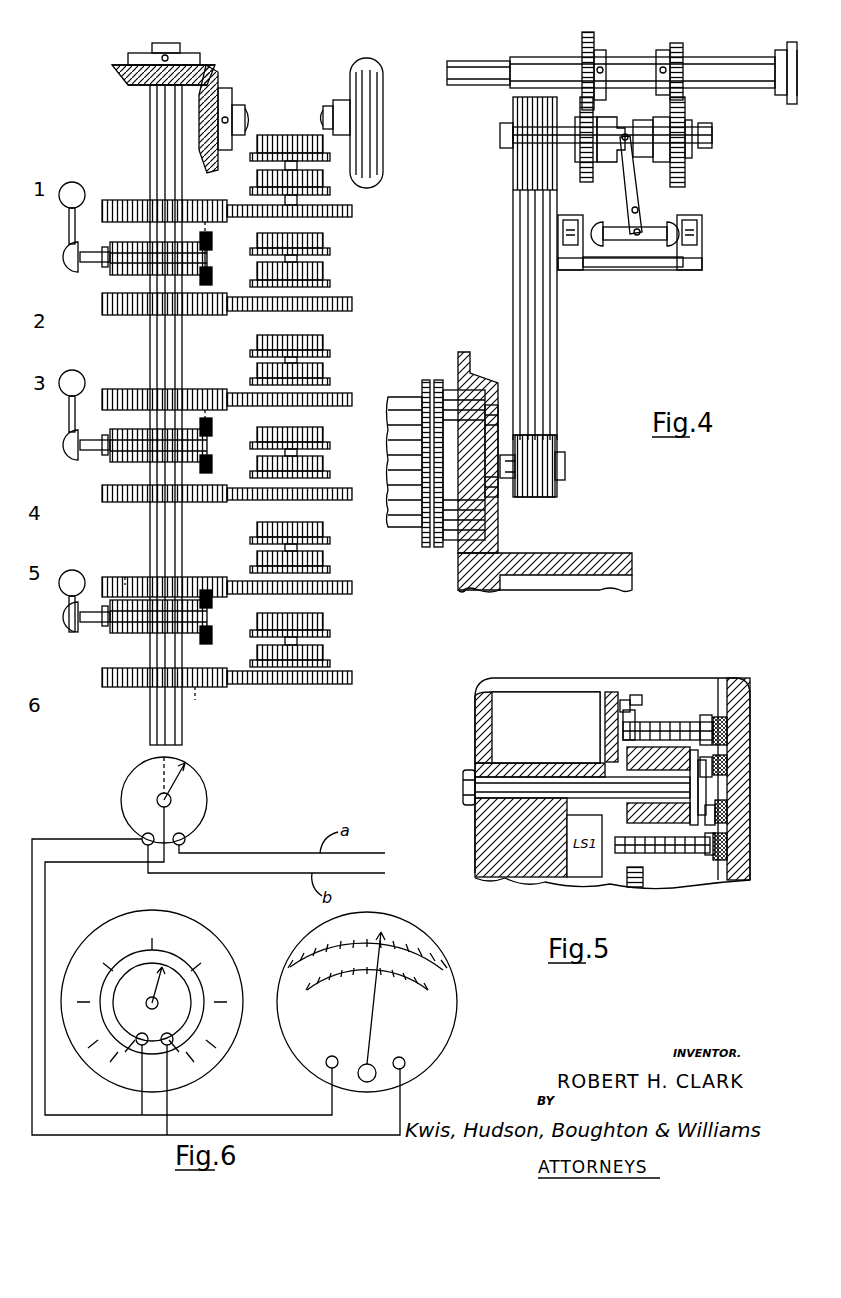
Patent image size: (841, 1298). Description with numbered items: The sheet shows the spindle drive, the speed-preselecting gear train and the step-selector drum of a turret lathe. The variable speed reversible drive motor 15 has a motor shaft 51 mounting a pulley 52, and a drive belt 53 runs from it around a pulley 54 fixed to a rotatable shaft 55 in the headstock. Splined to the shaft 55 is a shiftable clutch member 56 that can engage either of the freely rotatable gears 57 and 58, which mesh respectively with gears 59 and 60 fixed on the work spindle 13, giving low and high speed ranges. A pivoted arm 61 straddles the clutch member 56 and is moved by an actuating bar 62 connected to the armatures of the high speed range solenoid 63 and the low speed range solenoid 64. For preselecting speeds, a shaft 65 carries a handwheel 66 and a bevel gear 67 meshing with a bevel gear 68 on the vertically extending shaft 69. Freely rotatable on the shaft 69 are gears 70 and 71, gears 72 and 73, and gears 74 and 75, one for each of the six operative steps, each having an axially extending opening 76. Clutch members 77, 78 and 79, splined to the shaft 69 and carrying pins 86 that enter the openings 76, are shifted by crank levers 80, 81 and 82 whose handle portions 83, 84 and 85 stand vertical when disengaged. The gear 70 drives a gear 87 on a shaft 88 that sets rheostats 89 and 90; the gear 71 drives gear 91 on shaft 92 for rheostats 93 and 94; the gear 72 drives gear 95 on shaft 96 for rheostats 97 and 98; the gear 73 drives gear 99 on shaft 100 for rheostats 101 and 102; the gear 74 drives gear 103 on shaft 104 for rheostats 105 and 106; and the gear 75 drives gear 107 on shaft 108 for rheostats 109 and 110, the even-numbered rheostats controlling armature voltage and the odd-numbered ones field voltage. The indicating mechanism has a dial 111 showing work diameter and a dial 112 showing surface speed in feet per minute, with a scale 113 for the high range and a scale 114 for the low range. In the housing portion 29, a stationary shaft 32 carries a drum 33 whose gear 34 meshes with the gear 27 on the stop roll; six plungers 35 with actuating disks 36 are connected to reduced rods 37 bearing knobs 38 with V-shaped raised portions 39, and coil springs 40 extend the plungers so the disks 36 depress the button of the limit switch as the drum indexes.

In FIG. 4, the work spindle 13 is at (730, 60).
In FIG. 4, the spindle drive motor 15 is at (405, 395).
In FIG. 5, the gear 27 is at (645, 887).
In FIG. 5, the housing portion 29 is at (480, 820).
In FIG. 5, the stationary shaft 32 is at (576, 787).
In FIG. 5, the drum 33 is at (660, 740).
In FIG. 5, the gear 34 is at (634, 695).
In FIG. 5, the plungers 35 is at (640, 722).
In FIG. 5, the actuating disks 36 is at (620, 720).
In FIG. 5, the reduced rods 37 is at (703, 742).
In FIG. 5, the knobs 38 is at (727, 722).
In FIG. 5, the V-shaped raised portions 39 is at (727, 738).
In FIG. 5, the coil springs 40 is at (697, 715).
In FIG. 4, the motor shaft 51 is at (565, 462).
In FIG. 4, the pulley 52 is at (558, 440).
In FIG. 4, the drive belt 53 is at (557, 340).
In FIG. 4, the pulley 54 is at (513, 172).
In FIG. 4, the rotatable shaft 55 is at (702, 137).
In FIG. 4, the shiftable clutch member 56 is at (624, 130).
In FIG. 4, the gear 57 is at (586, 182).
In FIG. 4, the gear 58 is at (683, 187).
In FIG. 4, the gear 59 is at (588, 32).
In FIG. 4, the gear 60 is at (683, 48).
In FIG. 4, the pivoted arm 61 is at (636, 190).
In FIG. 4, the actuating bar 62 is at (655, 270).
In FIG. 4, the high speed range solenoid 63 is at (568, 270).
In FIG. 4, the low speed range solenoid 64 is at (702, 230).
In FIG. 4, the shaft 65 is at (243, 108).
In FIG. 4, the handwheel 66 is at (383, 130).
In FIG. 4, the bevel gear 67 is at (222, 72).
In FIG. 4, the bevel gear 68 is at (135, 88).
In FIG. 4, the vertically extending shaft 69 is at (160, 166).
In FIG. 4, the gear 70 is at (192, 205).
In FIG. 4, the gear 71 is at (198, 315).
In FIG. 4, the gear 72 is at (190, 395).
In FIG. 4, the gear 73 is at (198, 503).
In FIG. 4, the gear 74 is at (200, 578).
In FIG. 4, the gear 75 is at (216, 688).
In FIG. 4, the axially extending opening 76 is at (210, 225).
In FIG. 4, the shiftable clutch member 77 is at (118, 275).
In FIG. 4, the shiftable clutch member 78 is at (118, 462).
In FIG. 4, the shiftable clutch member 79 is at (198, 634).
In FIG. 4, the crank lever 80 is at (92, 265).
In FIG. 4, the crank lever 81 is at (92, 453).
In FIG. 4, the crank lever 82 is at (92, 626).
In FIG. 4, the handle portion 83 is at (68, 220).
In FIG. 4, the handle portion 84 is at (68, 408).
In FIG. 4, the handle portion 85 is at (68, 608).
In FIG. 4, the axially extending pins 86 is at (212, 250).
In FIG. 4, the gear 87 is at (348, 217).
In FIG. 4, the shaft 88 is at (286, 165).
In FIG. 4, the rheostat 89 is at (290, 182).
In FIG. 4, the rheostat 90 is at (290, 148).
In FIG. 4, the gear 91 is at (352, 305).
In FIG. 4, the shaft 92 is at (298, 258).
In FIG. 4, the rheostat 93 is at (324, 270).
In FIG. 4, the rheostat 94 is at (290, 240).
In FIG. 4, the gear 95 is at (350, 395).
In FIG. 4, the shaft 96 is at (298, 360).
In FIG. 4, the rheostat 97 is at (324, 370).
In FIG. 4, the rheostat 98 is at (312, 340).
In FIG. 4, the gear 99 is at (346, 500).
In FIG. 4, the shaft 100 is at (298, 452).
In FIG. 4, the rheostat 101 is at (324, 465).
In FIG. 4, the rheostat 102 is at (314, 435).
In FIG. 4, the gear 103 is at (352, 588).
In FIG. 4, the shaft 104 is at (298, 547).
In FIG. 4, the rheostat 105 is at (324, 560).
In FIG. 4, the rheostat 106 is at (288, 530).
In FIG. 4, the gear 107 is at (352, 682).
In FIG. 4, the shaft 108 is at (298, 641).
In FIG. 4, the rheostat 109 is at (324, 654).
In FIG. 4, the rheostat 110 is at (304, 622).
In FIG. 6, the dial 111 is at (212, 1072).
In FIG. 6, the dial 112 is at (440, 1058).
In FIG. 6, the scale 113 is at (290, 967).
In FIG. 6, the scale 114 is at (307, 990).